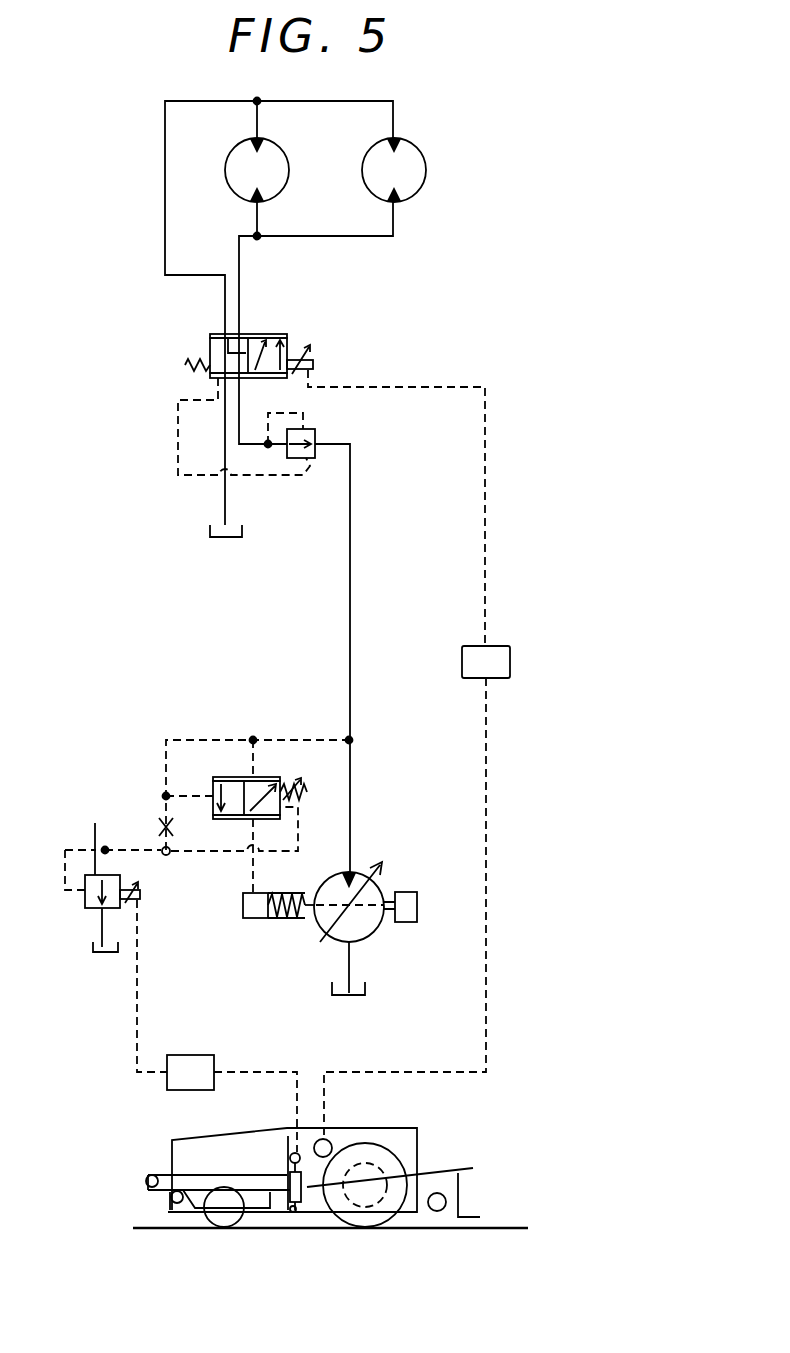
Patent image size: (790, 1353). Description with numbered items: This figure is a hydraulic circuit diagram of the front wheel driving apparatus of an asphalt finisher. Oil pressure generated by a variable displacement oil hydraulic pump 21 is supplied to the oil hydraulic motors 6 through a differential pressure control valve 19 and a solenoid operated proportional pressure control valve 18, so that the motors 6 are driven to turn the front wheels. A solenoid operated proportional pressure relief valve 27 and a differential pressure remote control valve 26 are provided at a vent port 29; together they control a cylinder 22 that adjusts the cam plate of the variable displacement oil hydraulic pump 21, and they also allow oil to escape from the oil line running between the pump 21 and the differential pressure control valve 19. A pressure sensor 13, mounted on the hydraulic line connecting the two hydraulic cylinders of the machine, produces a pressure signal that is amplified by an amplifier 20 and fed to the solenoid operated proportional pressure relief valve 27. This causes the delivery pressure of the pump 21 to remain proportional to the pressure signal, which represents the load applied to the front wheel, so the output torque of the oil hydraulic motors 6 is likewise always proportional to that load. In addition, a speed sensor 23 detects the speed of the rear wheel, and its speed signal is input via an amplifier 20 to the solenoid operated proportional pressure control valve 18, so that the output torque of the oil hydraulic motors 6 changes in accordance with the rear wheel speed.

The oil hydraulic motor 6 is at (289, 158).
The pressure sensor 13 is at (302, 1165).
The solenoid operated proportional pressure control valve 18 is at (287, 340).
The differential pressure control valve 19 is at (316, 435).
The amplifier 20 is at (505, 646).
The variable displacement oil hydraulic pump 21 is at (375, 880).
The cylinder 22 is at (258, 918).
The speed sensor 23 is at (331, 1141).
The differential pressure remote control valve 26 is at (220, 777).
The solenoid operated proportional pressure relief valve 27 is at (95, 823).
The vent port 29 is at (167, 856).